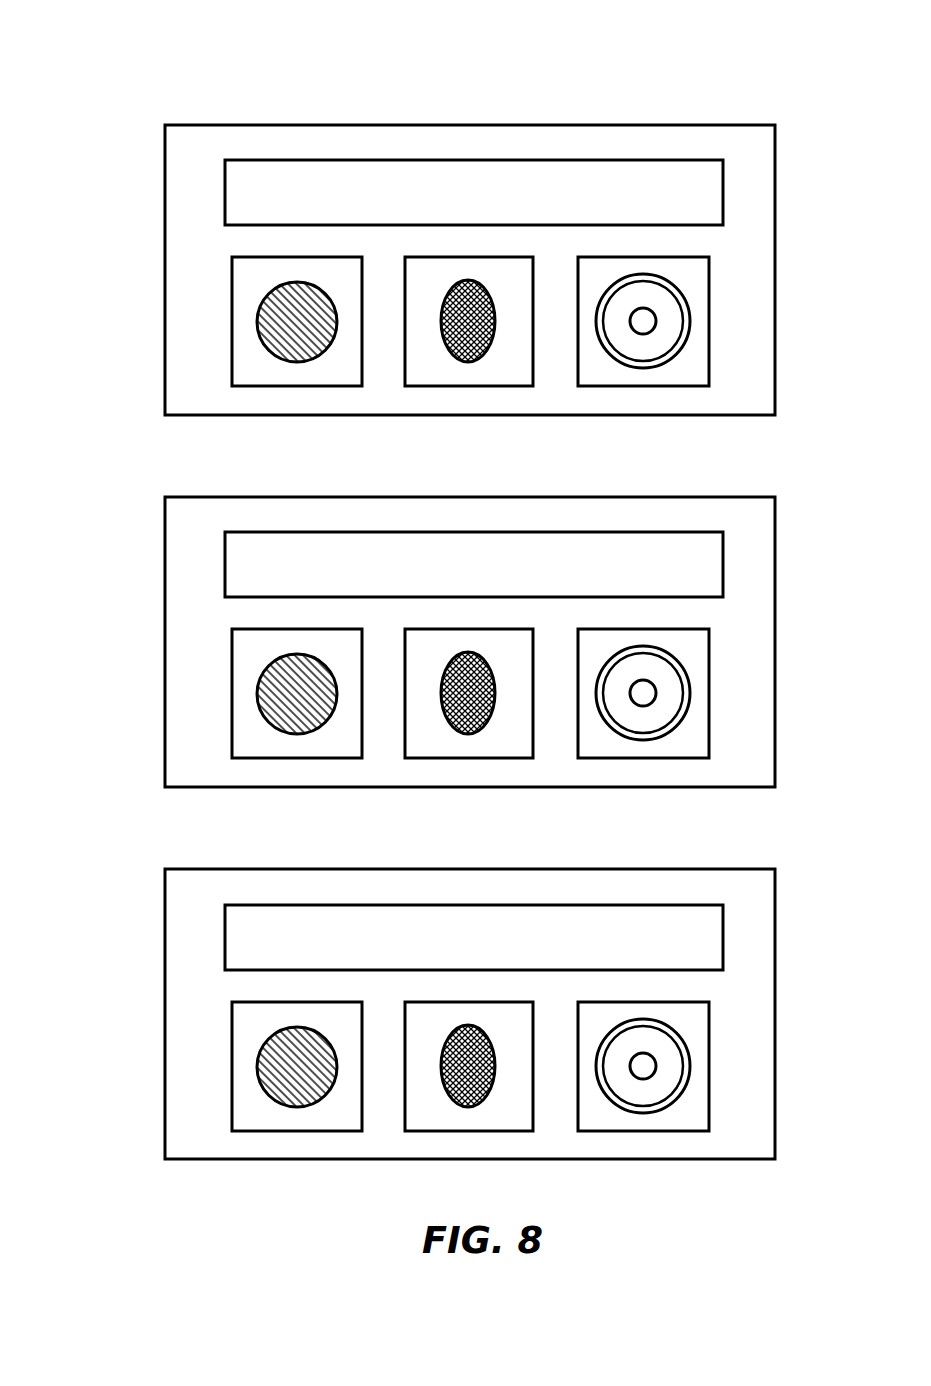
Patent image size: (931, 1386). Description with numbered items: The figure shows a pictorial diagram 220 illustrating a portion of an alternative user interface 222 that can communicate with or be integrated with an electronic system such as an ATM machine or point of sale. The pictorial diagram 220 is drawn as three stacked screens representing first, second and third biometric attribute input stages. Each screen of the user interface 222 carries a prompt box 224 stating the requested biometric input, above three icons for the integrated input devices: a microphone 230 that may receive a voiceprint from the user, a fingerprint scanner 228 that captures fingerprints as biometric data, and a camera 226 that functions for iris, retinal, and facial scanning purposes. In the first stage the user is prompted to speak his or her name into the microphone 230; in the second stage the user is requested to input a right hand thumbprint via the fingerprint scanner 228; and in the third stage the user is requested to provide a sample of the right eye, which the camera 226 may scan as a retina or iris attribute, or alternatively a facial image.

The pictorial diagram 220 is at (92, 70).
The user interface 222 is at (315, 125).
The biometric input prompt text box 224 is at (473, 160).
The camera 226 is at (709, 320).
The fingerprint scanner 228 is at (468, 386).
The microphone 230 is at (295, 386).